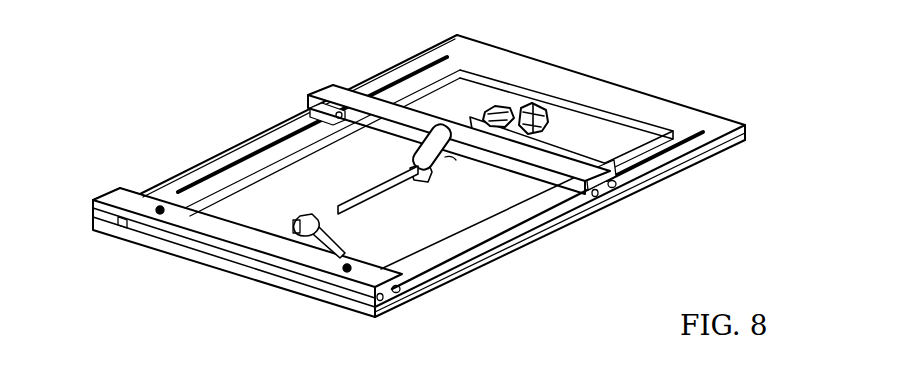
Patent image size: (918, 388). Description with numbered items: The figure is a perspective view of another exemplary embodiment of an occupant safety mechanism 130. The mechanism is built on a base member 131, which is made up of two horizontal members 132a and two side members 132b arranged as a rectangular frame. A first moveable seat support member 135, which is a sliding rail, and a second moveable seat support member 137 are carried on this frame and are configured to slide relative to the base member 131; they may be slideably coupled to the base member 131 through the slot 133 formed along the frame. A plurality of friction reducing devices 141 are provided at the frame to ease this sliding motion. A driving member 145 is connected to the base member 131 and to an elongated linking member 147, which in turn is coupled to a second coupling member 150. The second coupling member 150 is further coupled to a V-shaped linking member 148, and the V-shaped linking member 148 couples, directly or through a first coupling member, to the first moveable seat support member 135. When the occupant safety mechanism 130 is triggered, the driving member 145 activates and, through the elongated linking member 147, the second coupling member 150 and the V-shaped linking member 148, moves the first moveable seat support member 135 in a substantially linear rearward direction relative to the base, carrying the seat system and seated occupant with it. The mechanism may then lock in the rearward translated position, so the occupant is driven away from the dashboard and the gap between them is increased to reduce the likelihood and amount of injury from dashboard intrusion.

The occupant safety mechanism 130 is at (168, 70).
The base member 131 is at (545, 74).
The horizontal members 132a is at (648, 98).
The side members 132b is at (243, 146).
The slot 133 is at (193, 185).
The first moveable seat support member 135 is at (112, 193).
The second moveable seat support member 137 is at (563, 162).
The friction reducing devices 141 is at (302, 80).
The driving member 145 is at (447, 157).
The elongated linking member 147 is at (370, 187).
The V-shaped linking member 148 is at (326, 229).
The second coupling member 150 is at (318, 214).